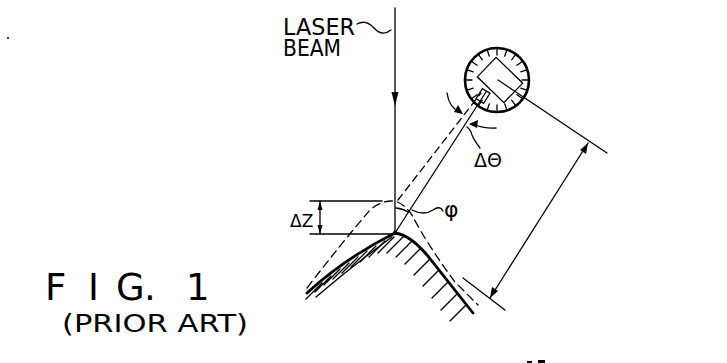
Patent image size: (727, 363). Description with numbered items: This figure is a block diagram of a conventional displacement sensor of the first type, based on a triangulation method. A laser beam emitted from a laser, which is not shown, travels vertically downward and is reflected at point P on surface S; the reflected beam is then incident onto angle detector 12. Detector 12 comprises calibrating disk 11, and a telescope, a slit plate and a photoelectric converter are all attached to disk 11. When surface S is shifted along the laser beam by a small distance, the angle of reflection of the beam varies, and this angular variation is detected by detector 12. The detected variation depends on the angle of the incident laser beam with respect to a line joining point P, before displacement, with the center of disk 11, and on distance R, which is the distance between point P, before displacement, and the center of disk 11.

The calibrating disk 11 is at (513, 52).
The angle detector 12 is at (529, 79).
The point P is at (395, 233).
The surface S is at (451, 282).
The distance R is at (535, 195).